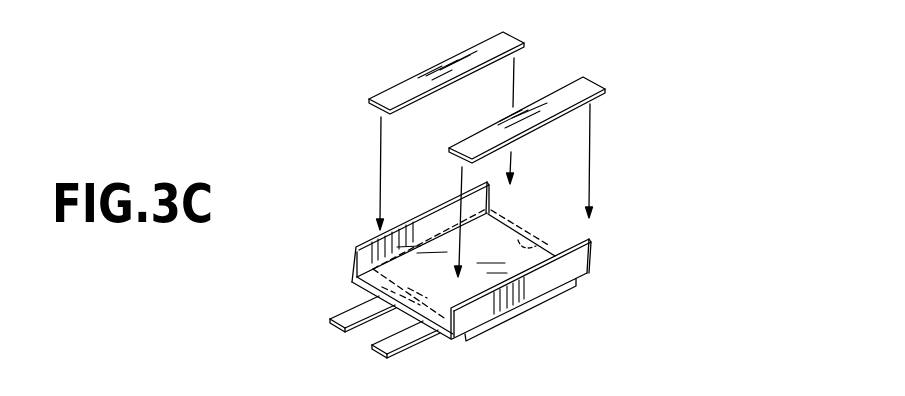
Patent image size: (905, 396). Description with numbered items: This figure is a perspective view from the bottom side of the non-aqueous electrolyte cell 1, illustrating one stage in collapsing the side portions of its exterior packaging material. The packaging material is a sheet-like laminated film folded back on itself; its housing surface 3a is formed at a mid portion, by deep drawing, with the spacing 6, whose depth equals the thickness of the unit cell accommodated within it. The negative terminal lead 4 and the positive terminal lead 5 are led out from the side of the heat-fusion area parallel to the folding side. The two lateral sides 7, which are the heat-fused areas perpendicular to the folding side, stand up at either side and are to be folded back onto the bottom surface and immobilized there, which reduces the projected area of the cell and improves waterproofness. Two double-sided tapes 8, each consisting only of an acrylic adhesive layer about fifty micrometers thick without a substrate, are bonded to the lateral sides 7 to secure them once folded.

The non-aqueous electrolyte cell 1 is at (453, 275).
The housing surface 3a is at (495, 237).
The negative terminal lead 4 is at (413, 335).
The positive terminal lead 5 is at (333, 315).
The spacing 6 is at (532, 233).
The lateral sides 7 is at (353, 263).
The double-sided tape 8 is at (519, 41).